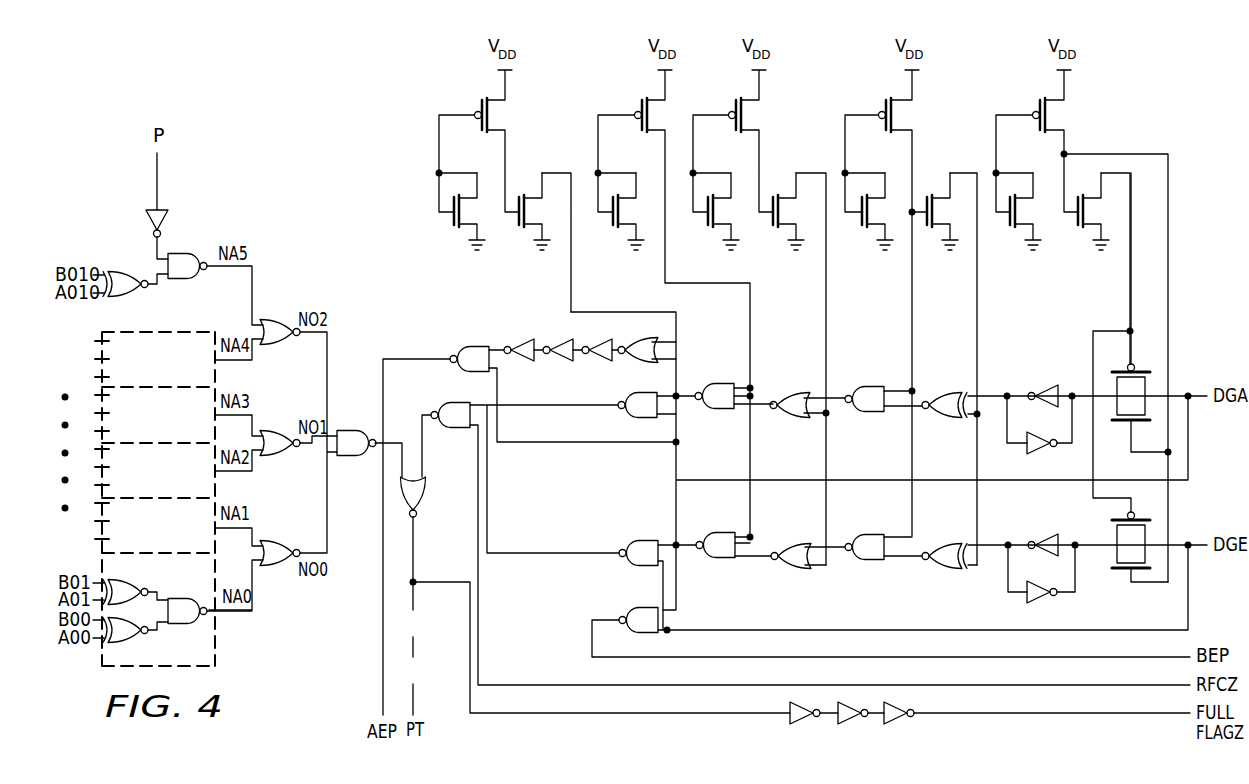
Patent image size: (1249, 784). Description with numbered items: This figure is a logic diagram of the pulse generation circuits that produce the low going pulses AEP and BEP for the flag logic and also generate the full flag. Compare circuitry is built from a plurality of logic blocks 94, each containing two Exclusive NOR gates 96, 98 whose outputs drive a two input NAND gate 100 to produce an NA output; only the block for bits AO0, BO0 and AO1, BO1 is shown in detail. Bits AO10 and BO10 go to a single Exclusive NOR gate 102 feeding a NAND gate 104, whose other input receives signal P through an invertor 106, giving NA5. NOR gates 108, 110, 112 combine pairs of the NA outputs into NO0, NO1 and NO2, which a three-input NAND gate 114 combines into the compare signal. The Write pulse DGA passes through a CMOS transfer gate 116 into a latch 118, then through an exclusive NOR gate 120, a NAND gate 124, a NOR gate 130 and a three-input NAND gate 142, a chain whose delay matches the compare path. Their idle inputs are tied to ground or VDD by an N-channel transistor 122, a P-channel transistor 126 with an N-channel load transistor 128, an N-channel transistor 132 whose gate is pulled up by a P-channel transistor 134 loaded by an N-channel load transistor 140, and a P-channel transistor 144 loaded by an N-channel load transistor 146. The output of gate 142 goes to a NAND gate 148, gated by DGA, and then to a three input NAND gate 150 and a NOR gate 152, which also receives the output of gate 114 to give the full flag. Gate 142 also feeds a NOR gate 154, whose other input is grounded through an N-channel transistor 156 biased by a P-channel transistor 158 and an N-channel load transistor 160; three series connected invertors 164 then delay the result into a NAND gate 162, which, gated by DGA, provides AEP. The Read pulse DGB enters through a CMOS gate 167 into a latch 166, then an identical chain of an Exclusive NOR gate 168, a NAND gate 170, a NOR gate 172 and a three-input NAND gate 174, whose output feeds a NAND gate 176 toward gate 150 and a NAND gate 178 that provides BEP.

The logic block 94 is at (202, 358).
The Exclusive NOR gate 96 is at (140, 642).
The Exclusive NOR gate 98 is at (136, 586).
The two input NAND gate 100 is at (186, 624).
The Exclusive NOR gate 102 is at (138, 293).
The NAND gate 104 is at (195, 279).
The invertor 106 is at (170, 217).
The NOR gate 108 is at (278, 541).
The NOR gate 110 is at (278, 430).
The NOR gate 112 is at (280, 319).
The three-input NAND gate 114 is at (350, 456).
The CMOS transfer gate 116 is at (1148, 384).
The latch 118 is at (1045, 425).
The exclusive NOR gate 120 is at (940, 392).
The N-channel transistor 122 is at (927, 226).
The NAND gate 124 is at (866, 386).
The P-channel transistor 126 is at (886, 100).
The N-channel load transistor 128 is at (862, 226).
The NOR gate 130 is at (790, 392).
The N-channel transistor 132 is at (773, 226).
The P-channel transistor 134 is at (735, 100).
The N-channel load transistor 140 is at (708, 226).
The three-input NAND gate 142 is at (712, 383).
The P-channel transistor 144 is at (641, 100).
The N-channel load transistor 146 is at (613, 226).
The NAND gate 148 is at (627, 418).
The three input NAND gate 150 is at (445, 402).
The NOR gate 152 is at (424, 506).
The NOR gate 154 is at (633, 364).
The N-channel transistor 156 is at (519, 226).
The P-channel transistor 158 is at (481, 100).
The N-channel load transistor 160 is at (454, 226).
The NAND gate 162 is at (458, 349).
The series connected invertors 164 is at (542, 333).
The latch 166 is at (1045, 575).
The CMOS gate 167 is at (1148, 537).
The Exclusive NOR gate 168 is at (944, 543).
The NAND gate 170 is at (866, 534).
The NOR gate 172 is at (796, 543).
The three-input NAND gate 174 is at (716, 532).
The NAND gate 176 is at (636, 540).
The NAND gate 178 is at (625, 609).